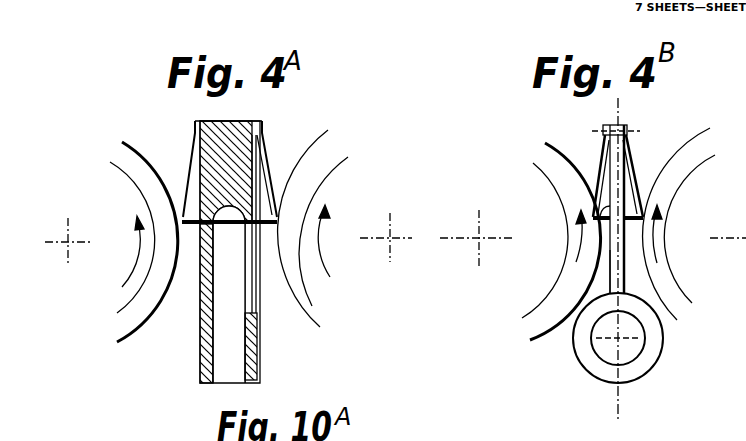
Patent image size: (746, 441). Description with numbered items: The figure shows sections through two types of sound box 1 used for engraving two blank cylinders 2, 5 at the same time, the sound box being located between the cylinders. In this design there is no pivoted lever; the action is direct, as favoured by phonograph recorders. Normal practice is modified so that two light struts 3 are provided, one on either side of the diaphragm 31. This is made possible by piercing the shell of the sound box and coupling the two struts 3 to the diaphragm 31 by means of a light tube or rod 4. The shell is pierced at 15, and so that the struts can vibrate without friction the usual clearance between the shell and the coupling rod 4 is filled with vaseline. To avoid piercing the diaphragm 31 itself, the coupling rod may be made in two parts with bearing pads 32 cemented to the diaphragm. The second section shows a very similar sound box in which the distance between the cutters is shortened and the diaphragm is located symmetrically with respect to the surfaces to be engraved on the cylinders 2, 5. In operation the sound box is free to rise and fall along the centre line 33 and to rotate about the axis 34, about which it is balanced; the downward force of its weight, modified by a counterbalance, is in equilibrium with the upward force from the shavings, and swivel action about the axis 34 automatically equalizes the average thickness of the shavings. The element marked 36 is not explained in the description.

In FIG. 4A, the sound box 1 is at (230, 121).
In FIG. 4B, the sound box 1 is at (611, 253).
In FIG. 4B, the blank cylinder 2 is at (565, 158).
In FIG. 4A, the light struts 3 is at (192, 168).
In FIG. 4B, the light struts 3 is at (603, 192).
In FIG. 4A, the light tube or rod 4 is at (190, 252).
In FIG. 4B, the light tube or rod 4 is at (634, 222).
In FIG. 4B, the blank cylinder 5 is at (706, 134).
In FIG. 4A, the pierced shell opening 15 is at (257, 231).
In FIG. 4A, the diaphragm 31 is at (256, 272).
In FIG. 4A, the bearing pads 32 is at (213, 229).
In FIG. 4B, the centre line 33 is at (621, 398).
In FIG. 4B, the axis 34 is at (617, 342).
In FIG. 4B, the stem 36 is at (598, 281).